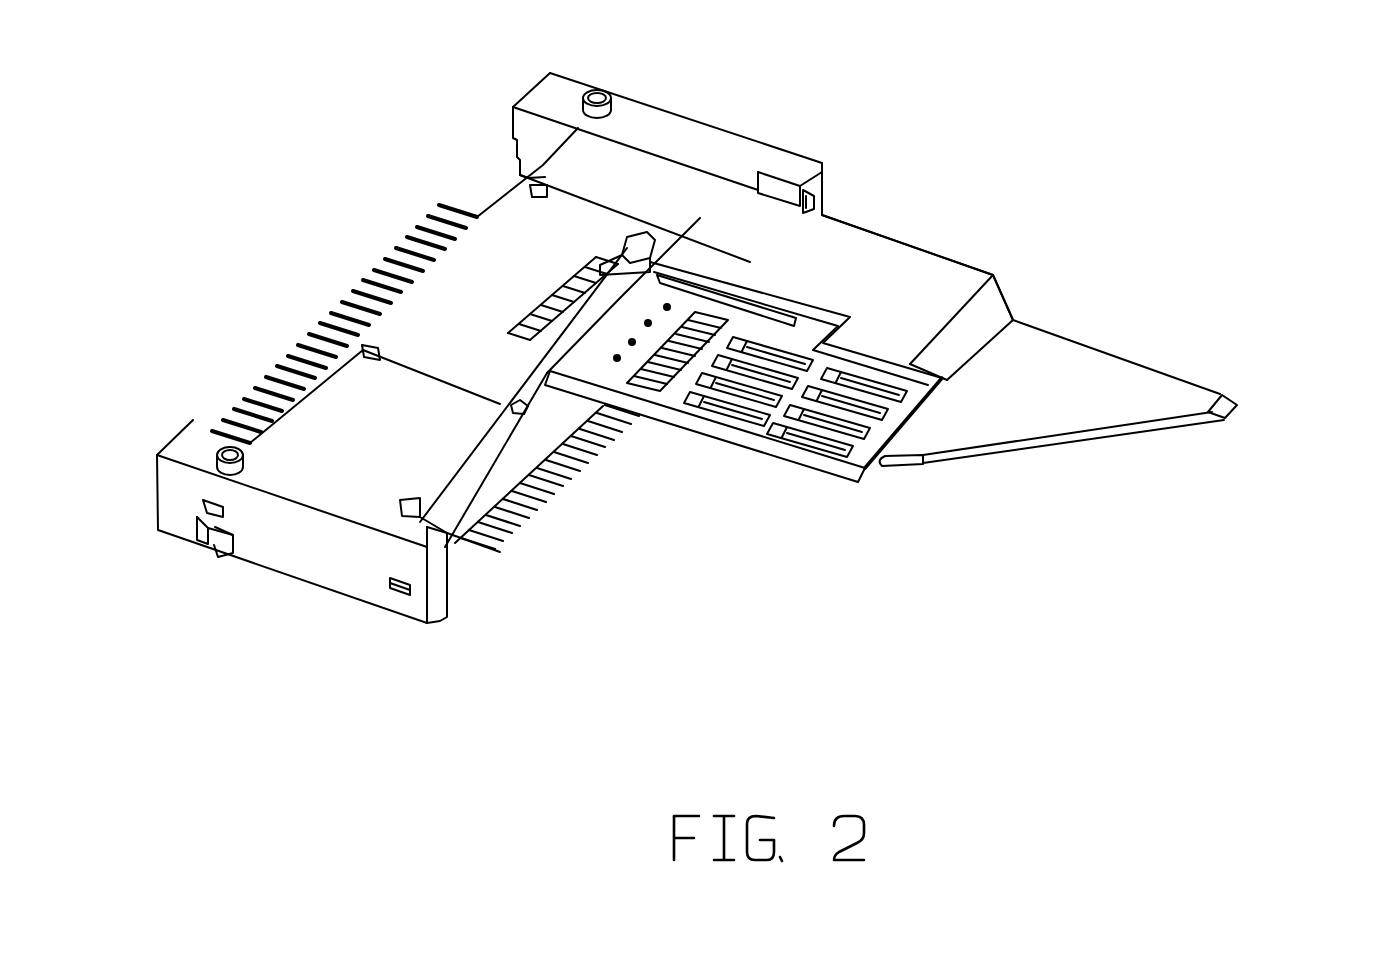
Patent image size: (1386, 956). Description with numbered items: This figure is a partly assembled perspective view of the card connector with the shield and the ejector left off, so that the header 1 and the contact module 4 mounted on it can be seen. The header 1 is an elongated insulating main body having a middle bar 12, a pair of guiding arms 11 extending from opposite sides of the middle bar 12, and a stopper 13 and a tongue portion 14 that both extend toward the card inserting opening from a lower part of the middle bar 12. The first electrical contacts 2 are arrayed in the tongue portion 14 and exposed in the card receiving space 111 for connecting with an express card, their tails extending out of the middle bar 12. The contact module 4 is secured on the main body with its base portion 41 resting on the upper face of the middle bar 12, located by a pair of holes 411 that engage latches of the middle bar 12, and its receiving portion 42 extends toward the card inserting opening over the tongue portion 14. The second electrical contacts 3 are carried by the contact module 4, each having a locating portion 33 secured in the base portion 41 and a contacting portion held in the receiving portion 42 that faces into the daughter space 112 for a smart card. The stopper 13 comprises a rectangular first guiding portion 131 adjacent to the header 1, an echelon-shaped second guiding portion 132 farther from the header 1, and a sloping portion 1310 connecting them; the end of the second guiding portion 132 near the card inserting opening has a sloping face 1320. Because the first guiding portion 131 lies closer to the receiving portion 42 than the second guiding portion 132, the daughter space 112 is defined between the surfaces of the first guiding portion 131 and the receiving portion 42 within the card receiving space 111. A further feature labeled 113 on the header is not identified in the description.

The header 1 is at (733, 157).
The guiding arms 11 is at (800, 160).
The card receiving space 111 is at (440, 580).
The daughter space 112 is at (830, 202).
The hook 113 is at (225, 553).
The middle bar 12 is at (417, 457).
The stopper 13 is at (980, 423).
The first guiding portion 131 is at (920, 267).
The sloping portion 1310 is at (987, 312).
The second guiding portion 132 is at (1083, 375).
The sloping face 1320 is at (1222, 395).
The tongue portion 14 is at (510, 458).
The first electrical contacts 2 is at (270, 375).
The second electrical contacts 3 is at (476, 213).
The locating portion 33 is at (587, 275).
The contact module 4 is at (893, 421).
The base portion 41 is at (427, 325).
The holes 411 is at (545, 176).
The receiving portion 42 is at (760, 430).